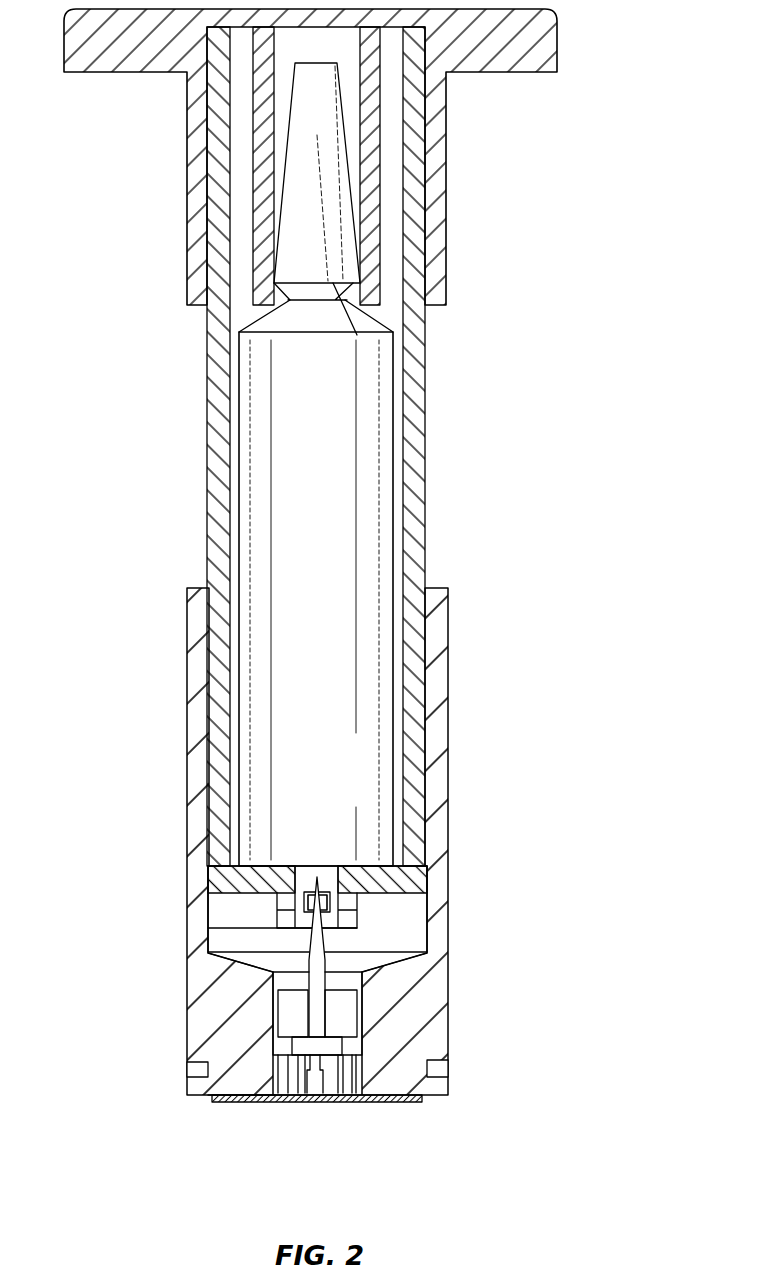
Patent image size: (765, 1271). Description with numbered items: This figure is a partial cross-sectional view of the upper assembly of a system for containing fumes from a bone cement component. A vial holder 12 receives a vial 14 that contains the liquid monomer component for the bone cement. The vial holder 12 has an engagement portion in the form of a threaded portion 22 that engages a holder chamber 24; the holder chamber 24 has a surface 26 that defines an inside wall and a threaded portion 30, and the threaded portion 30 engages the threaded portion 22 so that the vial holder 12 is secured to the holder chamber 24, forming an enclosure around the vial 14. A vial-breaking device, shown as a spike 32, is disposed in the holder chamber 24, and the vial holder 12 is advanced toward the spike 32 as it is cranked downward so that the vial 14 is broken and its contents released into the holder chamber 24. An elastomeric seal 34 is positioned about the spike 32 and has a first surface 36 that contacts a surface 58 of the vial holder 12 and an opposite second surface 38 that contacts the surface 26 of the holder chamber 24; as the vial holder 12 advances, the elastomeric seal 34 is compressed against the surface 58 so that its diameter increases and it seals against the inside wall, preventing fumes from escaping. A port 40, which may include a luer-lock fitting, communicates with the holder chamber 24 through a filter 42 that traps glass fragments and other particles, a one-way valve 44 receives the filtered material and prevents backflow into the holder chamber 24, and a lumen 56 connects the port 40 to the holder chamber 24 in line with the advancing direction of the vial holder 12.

The vial holder 12 is at (415, 490).
The vial 14 is at (370, 560).
The threaded portion 22 is at (288, 902).
The holder chamber 24 is at (438, 776).
The surface 26 is at (370, 1092).
The threaded portion 30 is at (283, 920).
The spike 32 is at (325, 948).
The elastomeric seal 34 is at (343, 1007).
The first surface 36 is at (290, 990).
The second surface 38 is at (232, 1097).
The port 40 is at (342, 1100).
The filter 42 is at (313, 1105).
The one-way valve 44 is at (273, 1102).
The lumen 56 is at (287, 1027).
The surface 58 is at (300, 927).